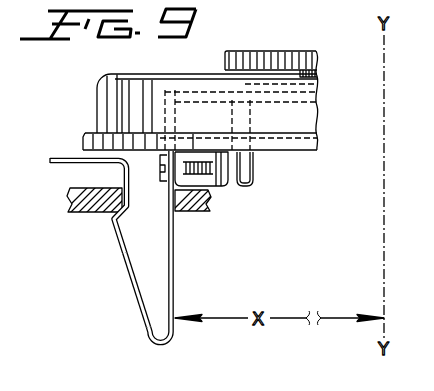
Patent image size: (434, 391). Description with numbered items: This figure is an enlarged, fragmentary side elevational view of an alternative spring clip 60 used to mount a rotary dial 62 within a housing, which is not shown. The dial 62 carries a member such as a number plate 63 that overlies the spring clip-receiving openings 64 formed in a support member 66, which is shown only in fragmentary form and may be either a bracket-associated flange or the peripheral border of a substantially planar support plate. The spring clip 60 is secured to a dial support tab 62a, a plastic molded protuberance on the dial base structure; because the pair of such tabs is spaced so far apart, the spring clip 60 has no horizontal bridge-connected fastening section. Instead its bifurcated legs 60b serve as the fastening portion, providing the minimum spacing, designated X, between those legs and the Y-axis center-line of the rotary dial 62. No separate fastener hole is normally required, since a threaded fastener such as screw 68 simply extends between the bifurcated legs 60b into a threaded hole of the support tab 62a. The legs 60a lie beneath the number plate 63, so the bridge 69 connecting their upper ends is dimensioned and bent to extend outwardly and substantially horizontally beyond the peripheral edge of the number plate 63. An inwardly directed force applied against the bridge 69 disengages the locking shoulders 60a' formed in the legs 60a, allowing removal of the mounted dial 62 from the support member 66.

The spring clip 60 is at (122, 242).
The bifurcated legs 60a is at (113, 304).
The locking shoulders 60a' is at (92, 226).
The bifurcated legs 60b is at (174, 270).
The rotary dial 62 is at (324, 109).
The dial support tab 62a is at (218, 190).
The number plate 63 is at (84, 133).
The spring clip-receiving openings 64 is at (146, 200).
The support member 66 is at (70, 208).
The screw 68 is at (212, 187).
The bridge 69 is at (68, 156).